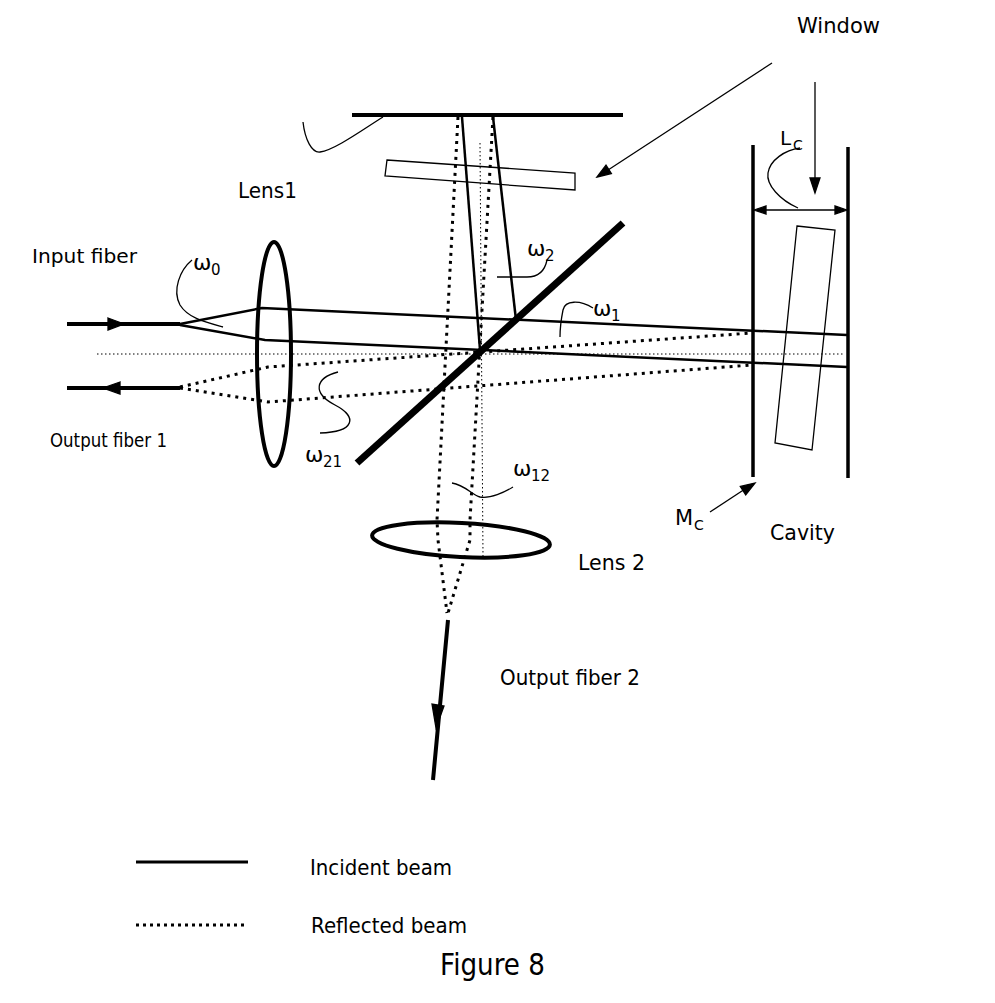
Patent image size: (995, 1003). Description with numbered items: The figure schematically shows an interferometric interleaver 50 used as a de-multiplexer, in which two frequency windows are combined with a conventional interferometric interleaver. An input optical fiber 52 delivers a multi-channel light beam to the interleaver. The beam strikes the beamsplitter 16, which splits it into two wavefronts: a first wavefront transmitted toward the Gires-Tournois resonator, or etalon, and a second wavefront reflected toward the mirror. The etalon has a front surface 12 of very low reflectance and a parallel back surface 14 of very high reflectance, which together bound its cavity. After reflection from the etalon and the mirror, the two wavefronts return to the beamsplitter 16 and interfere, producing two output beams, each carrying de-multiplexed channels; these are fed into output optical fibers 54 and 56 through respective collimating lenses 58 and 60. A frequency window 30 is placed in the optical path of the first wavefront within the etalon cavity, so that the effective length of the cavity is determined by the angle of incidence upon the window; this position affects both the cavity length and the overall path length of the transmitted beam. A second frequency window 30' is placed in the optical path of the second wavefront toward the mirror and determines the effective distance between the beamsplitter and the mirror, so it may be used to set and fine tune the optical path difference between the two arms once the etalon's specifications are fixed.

The front surface 12 is at (750, 258).
The back surface 14 is at (845, 148).
The beamsplitter 16 is at (593, 258).
The frequency window 30 is at (803, 362).
The second frequency window 30' is at (495, 159).
The interferometric interleaver 50 is at (487, 81).
The input optical fiber 52 is at (82, 322).
The output optical fiber 54 is at (82, 387).
The output optical fiber 56 is at (440, 747).
The collimating lens 58 is at (260, 419).
The collimating lens 60 is at (497, 558).